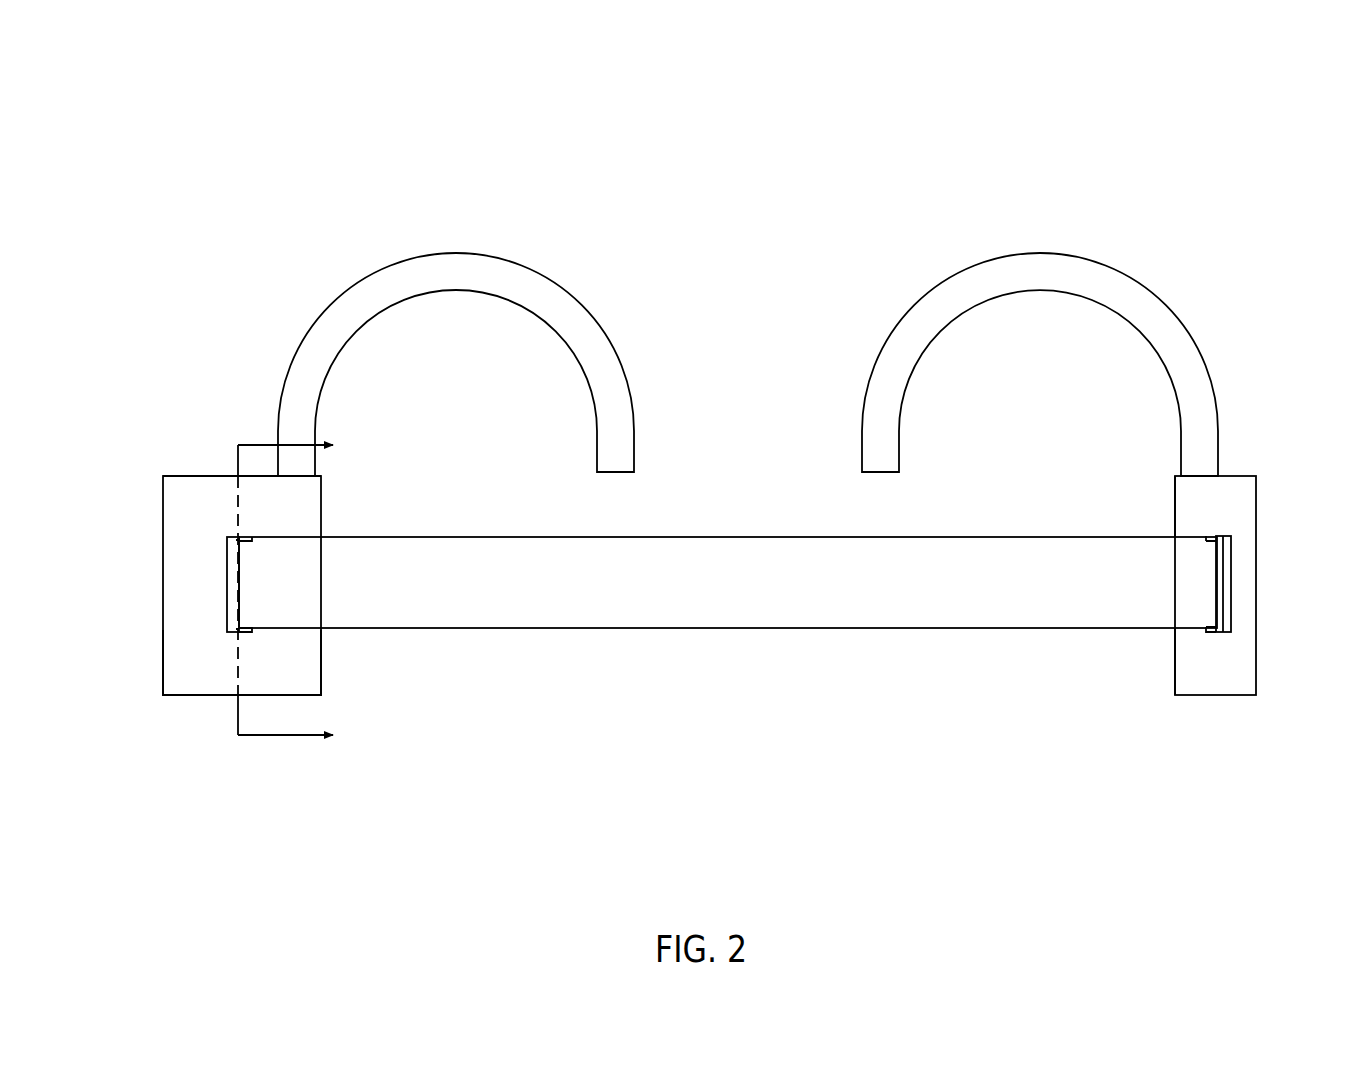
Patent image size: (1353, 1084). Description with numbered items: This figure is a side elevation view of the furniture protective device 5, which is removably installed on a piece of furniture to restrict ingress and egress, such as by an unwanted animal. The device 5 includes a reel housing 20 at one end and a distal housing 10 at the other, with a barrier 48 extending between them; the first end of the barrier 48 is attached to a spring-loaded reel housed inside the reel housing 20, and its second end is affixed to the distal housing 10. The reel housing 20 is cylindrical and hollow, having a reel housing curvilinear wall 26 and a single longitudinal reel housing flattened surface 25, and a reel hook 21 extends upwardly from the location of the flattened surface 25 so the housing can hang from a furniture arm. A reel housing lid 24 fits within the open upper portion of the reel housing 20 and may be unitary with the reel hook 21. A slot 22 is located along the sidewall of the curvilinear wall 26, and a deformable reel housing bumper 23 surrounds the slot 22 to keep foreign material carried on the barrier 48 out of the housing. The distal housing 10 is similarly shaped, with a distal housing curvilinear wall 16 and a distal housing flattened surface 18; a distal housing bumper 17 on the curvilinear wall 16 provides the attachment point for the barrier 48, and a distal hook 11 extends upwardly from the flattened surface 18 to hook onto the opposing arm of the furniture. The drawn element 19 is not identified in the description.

The furniture protective device 5 is at (253, 206).
The distal housing 10 is at (1252, 372).
The distal hook 11 is at (1032, 269).
The distal housing curvilinear wall 16 is at (1244, 560).
The distal housing bumper 17 is at (1227, 604).
The distal housing flattened surface 18 is at (1175, 507).
The right mount block 19 is at (1240, 475).
The reel housing 20 is at (150, 486).
The reel hook 21 is at (473, 277).
The slot 22 is at (250, 630).
The reel housing bumper 23 is at (230, 594).
The reel housing lid 24 is at (197, 476).
The reel housing flattened surface 25 is at (321, 519).
The reel housing curvilinear wall 26 is at (183, 678).
The barrier 48 is at (730, 628).